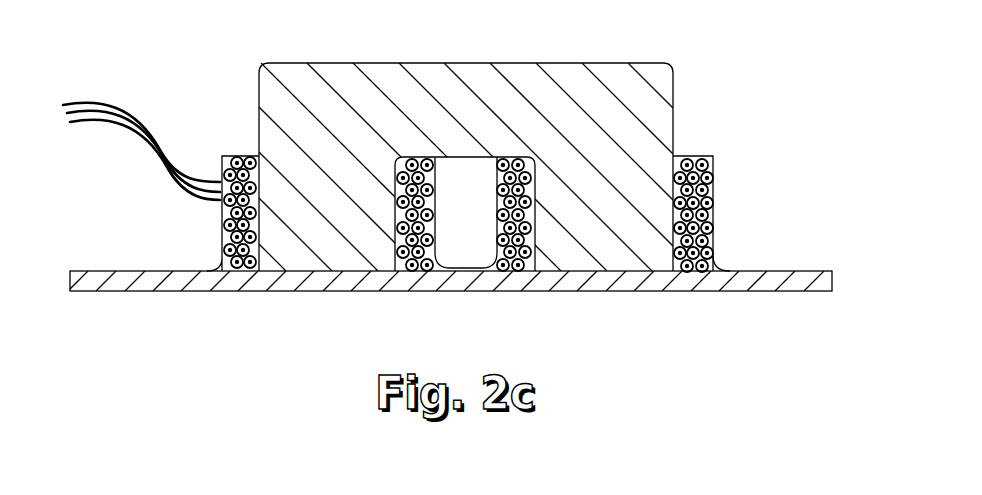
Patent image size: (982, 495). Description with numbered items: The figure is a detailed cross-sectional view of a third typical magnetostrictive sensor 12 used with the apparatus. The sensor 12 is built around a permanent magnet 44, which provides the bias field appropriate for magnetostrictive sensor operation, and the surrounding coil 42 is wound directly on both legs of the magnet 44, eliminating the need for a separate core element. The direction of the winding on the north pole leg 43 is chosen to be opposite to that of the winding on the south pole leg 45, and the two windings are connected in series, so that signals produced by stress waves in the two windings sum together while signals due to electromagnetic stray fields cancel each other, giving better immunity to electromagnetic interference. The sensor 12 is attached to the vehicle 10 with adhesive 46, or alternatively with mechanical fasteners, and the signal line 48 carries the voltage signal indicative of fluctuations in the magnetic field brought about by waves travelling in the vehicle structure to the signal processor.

The vehicle 10 is at (162, 269).
The magnetostrictive sensor 12 is at (512, 175).
The surrounding coil 42 is at (220, 162).
The north pole leg 43 is at (333, 257).
The permanent magnet 44 is at (468, 63).
The south pole leg 45 is at (610, 260).
The adhesive 46 is at (717, 270).
The signal line 48 is at (111, 100).